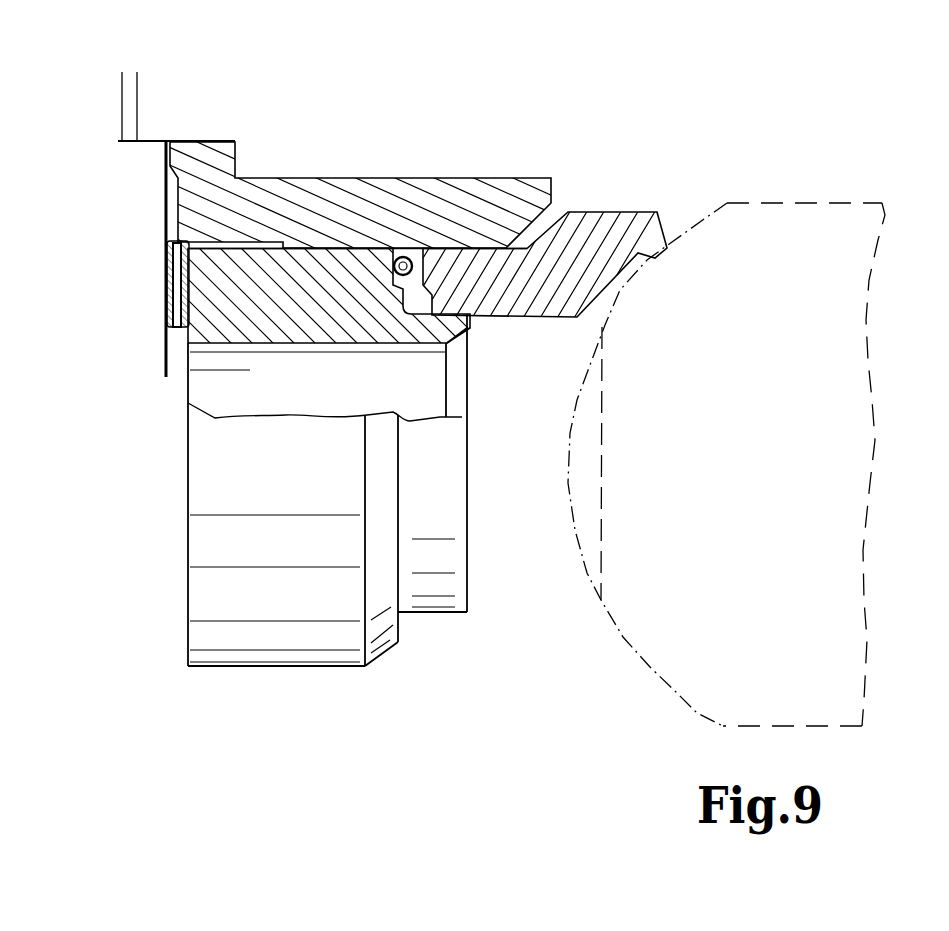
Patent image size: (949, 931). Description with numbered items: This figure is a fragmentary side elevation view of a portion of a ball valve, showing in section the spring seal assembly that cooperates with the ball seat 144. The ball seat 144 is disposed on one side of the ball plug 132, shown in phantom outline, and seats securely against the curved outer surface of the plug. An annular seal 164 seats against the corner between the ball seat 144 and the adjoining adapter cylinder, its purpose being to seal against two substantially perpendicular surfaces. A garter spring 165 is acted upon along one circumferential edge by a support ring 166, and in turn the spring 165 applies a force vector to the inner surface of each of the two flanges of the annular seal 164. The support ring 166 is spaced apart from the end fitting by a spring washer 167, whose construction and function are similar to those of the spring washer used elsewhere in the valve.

The ball plug 132 is at (773, 232).
The ball seat 144 is at (613, 225).
The annular seal 164 is at (407, 248).
The garter spring 165 is at (383, 253).
The support ring 166 is at (277, 262).
The spring washer 167 is at (168, 302).